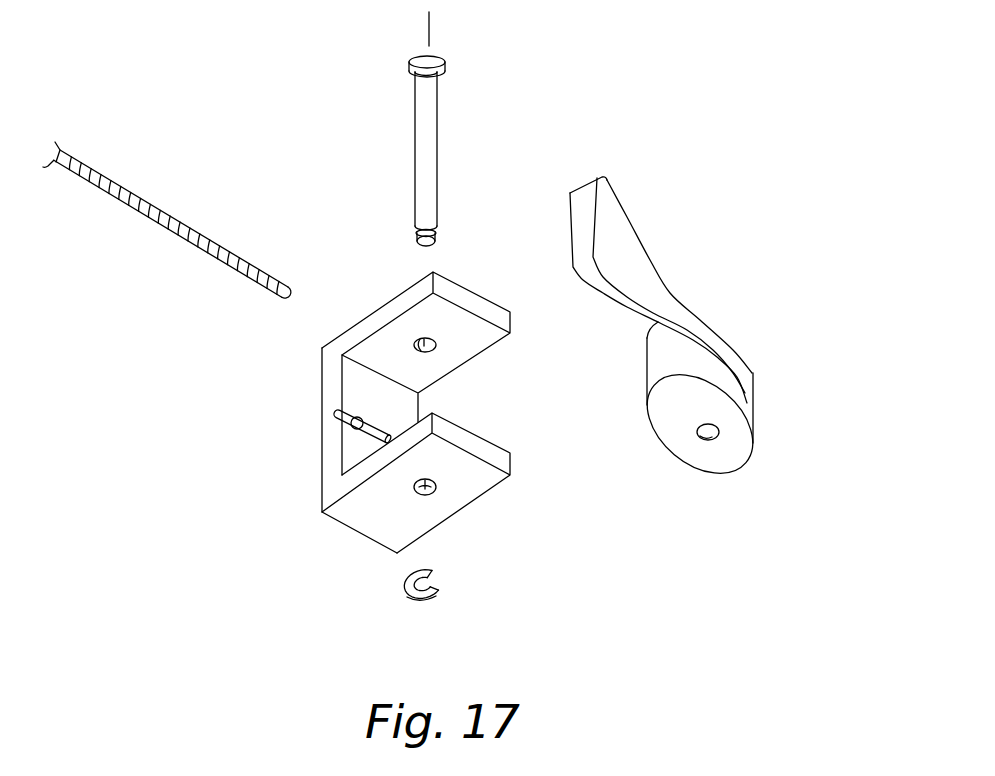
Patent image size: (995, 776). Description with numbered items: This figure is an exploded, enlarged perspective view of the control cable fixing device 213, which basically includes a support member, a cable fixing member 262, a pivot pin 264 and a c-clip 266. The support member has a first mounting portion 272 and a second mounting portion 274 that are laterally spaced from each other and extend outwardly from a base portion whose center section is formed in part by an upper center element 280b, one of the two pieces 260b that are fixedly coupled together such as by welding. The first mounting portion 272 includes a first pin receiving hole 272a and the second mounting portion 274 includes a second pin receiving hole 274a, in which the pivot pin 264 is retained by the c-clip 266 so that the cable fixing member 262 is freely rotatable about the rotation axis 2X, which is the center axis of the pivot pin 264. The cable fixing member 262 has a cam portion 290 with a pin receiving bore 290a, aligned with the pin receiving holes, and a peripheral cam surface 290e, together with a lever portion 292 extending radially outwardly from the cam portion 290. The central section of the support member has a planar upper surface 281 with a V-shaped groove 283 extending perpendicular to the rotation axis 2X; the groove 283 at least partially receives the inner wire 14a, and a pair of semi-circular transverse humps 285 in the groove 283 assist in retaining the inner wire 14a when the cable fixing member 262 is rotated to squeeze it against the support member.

The rotation axis 2X is at (430, 32).
The pivot pin 264 is at (450, 102).
The inner wire 14a is at (175, 220).
The upper center element 260b is at (409, 405).
The second mounting portion 274 is at (394, 318).
The second pin receiving hole 274a is at (412, 350).
The upper center element 280b is at (325, 484).
The upper surface 281 is at (357, 383).
The V-shaped groove 283 is at (382, 443).
The transverse humps 285 is at (363, 423).
The first mounting portion 272 is at (467, 503).
The first pin receiving hole 272a is at (427, 492).
The c-clip 266 is at (440, 594).
The control cable fixing device 213 is at (720, 326).
The cable fixing member 262 is at (720, 362).
The lever portion 292 is at (648, 232).
The cam portion 290 is at (734, 420).
The pin receiving bore 290a is at (712, 438).
The peripheral cam surface 290e is at (684, 462).